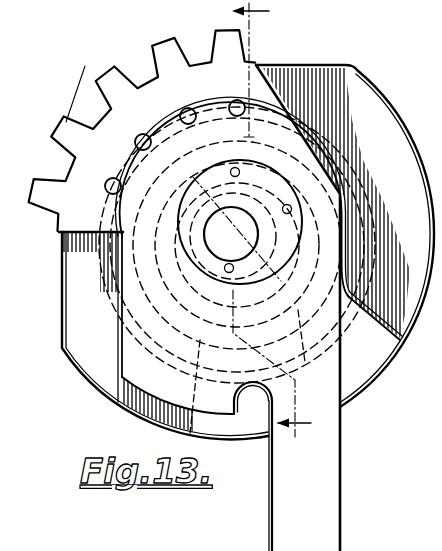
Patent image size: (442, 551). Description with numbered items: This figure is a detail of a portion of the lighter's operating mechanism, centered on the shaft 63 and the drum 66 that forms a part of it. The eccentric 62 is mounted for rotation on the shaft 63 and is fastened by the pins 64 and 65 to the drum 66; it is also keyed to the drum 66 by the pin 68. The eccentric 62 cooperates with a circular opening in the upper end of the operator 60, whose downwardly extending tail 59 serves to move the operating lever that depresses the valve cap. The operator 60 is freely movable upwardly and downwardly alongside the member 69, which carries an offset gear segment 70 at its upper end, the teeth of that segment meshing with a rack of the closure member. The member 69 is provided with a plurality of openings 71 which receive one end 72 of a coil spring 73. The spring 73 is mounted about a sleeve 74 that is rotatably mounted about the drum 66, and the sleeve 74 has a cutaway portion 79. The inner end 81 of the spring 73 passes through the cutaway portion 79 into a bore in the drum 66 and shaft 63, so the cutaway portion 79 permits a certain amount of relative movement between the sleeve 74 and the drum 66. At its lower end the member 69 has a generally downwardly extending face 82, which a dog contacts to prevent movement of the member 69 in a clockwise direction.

The tail 59 is at (323, 495).
The operator 60 is at (142, 355).
The eccentric 62 is at (294, 228).
The shaft 63 is at (228, 253).
The pin 64 is at (234, 168).
The pin 65 is at (290, 206).
The drum 66 is at (343, 310).
The pin 68 is at (232, 272).
The member 69 is at (83, 207).
The offset gear segment 70 is at (160, 52).
The openings 71 is at (114, 178).
The end of coil spring 72 is at (242, 102).
The coil spring 73 is at (362, 252).
The sleeve 74 is at (145, 257).
The cutaway portion 79 is at (151, 540).
The inner end of spring 81 is at (335, 330).
The face 82 is at (244, 425).